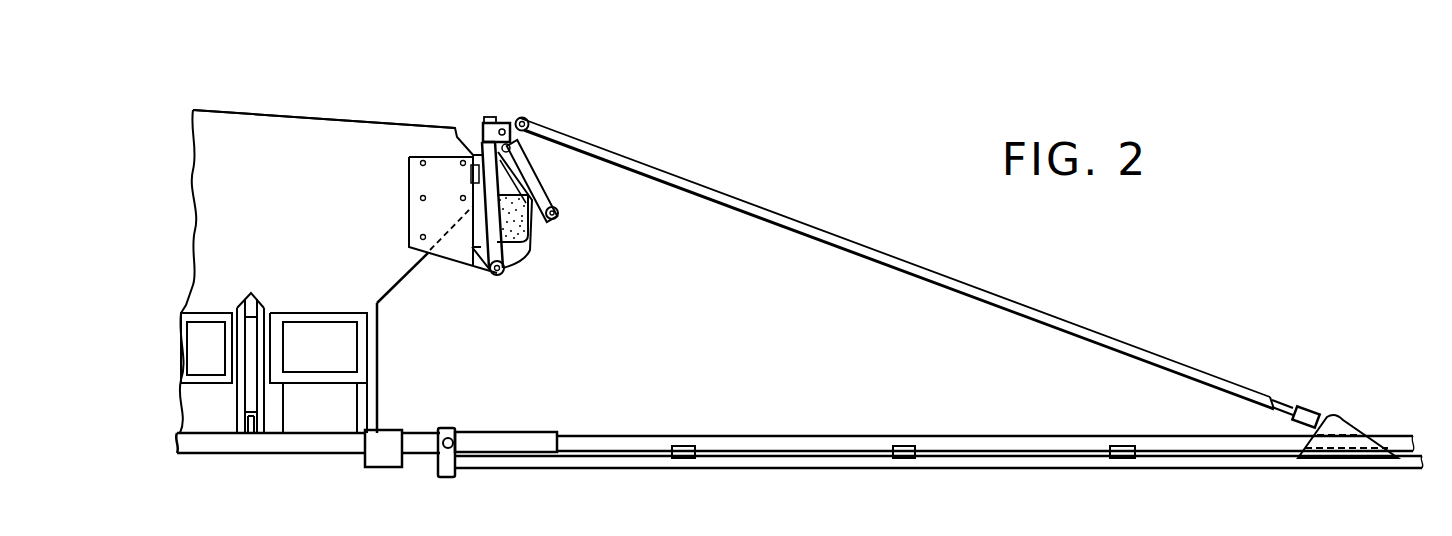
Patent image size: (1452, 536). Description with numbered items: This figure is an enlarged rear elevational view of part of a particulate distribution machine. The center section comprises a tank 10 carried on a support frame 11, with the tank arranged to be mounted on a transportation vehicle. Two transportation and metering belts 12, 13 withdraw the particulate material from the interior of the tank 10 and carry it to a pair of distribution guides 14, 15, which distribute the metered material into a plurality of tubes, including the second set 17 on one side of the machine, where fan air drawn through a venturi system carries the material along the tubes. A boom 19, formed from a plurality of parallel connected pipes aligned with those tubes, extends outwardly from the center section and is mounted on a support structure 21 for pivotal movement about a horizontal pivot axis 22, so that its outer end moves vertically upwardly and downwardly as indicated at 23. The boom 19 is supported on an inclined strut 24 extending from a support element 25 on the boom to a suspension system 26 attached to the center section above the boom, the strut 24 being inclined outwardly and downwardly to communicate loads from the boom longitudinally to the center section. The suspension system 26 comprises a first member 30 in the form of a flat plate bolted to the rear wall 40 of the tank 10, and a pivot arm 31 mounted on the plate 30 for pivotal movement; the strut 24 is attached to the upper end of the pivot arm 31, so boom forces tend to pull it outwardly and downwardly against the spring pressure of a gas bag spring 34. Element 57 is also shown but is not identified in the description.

The tank 10 is at (372, 109).
The support frame 11 is at (382, 366).
The transportation and metering belt 12 is at (209, 323).
The transportation and metering belt 13 is at (322, 323).
The distribution guide 14 is at (208, 420).
The distribution guide 15 is at (332, 407).
The second set of tubes 17 is at (427, 448).
The boom 19 is at (772, 411).
The support structure 21 is at (463, 415).
The horizontal pivot axis 22 is at (460, 440).
The vertical movement of boom outer end 23 is at (1089, 378).
The inclined strut 24 is at (933, 264).
The support element 25 is at (1342, 404).
The suspension system 26 is at (590, 247).
The first member 30 is at (422, 175).
The pivot arm 31 is at (473, 255).
The gas bag spring 34 is at (518, 230).
The rear wall 40 is at (235, 130).
The link 57 is at (555, 192).